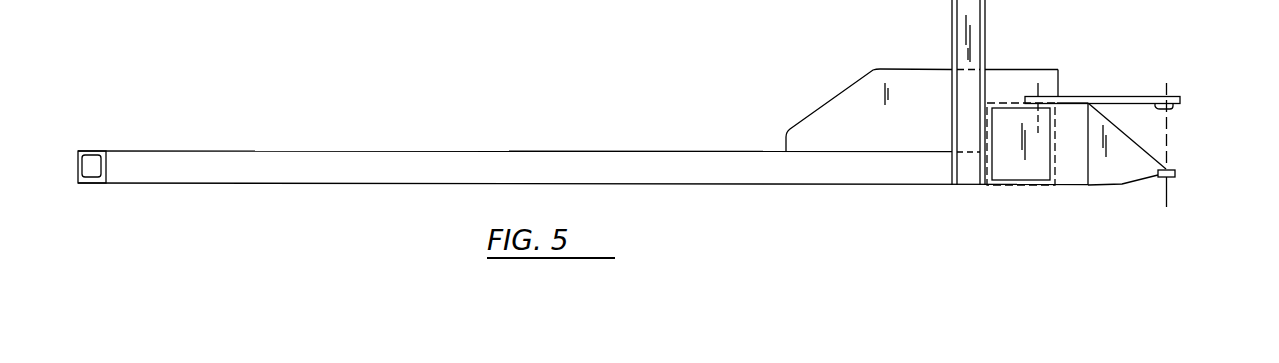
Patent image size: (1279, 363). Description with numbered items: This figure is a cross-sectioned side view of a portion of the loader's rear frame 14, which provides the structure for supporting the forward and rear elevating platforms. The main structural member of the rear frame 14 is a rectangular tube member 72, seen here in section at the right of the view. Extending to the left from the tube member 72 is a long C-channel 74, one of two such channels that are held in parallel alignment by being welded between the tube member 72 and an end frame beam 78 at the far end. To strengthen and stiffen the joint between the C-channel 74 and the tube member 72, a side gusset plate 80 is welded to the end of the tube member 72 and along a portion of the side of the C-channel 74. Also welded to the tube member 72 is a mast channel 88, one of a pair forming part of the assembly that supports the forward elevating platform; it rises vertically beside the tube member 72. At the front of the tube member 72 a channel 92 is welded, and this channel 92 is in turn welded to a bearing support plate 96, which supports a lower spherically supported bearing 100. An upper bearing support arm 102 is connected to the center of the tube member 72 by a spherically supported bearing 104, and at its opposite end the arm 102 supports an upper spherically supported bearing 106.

The rear frame 14 is at (583, 170).
The C-channel 74 is at (330, 160).
The end frame beam 78 is at (90, 150).
The side gusset plate 80 is at (845, 103).
The mast channel 88 is at (952, 8).
The rectangular tube member 72 is at (1016, 186).
The channel 92 is at (1075, 180).
The bearing support plate 96 is at (1117, 174).
The lower spherically supported bearing 100 is at (1175, 175).
The upper bearing support arm 102 is at (1134, 97).
The spherically supported bearing 104 is at (1043, 96).
The upper spherically supported bearing 106 is at (1180, 97).